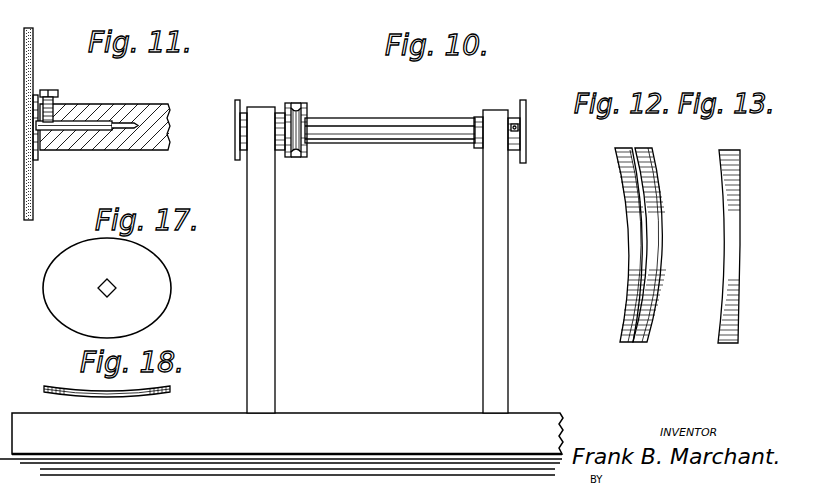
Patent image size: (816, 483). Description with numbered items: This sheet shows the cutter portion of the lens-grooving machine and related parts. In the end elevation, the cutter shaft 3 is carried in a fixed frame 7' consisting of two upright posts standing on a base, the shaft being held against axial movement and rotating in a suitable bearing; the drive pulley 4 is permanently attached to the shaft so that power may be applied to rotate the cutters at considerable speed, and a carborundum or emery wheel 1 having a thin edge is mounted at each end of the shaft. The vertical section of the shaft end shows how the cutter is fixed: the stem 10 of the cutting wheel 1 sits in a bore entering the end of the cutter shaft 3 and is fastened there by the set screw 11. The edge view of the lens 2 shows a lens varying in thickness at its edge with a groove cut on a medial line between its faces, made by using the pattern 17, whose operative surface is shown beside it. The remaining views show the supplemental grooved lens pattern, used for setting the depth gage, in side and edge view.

In FIG. 11, the carborundum or emery wheel 1 is at (34, 52).
In FIG. 10, the carborundum or emery wheel 1 is at (527, 112).
In FIG. 12, the lens 2 is at (628, 224).
In FIG. 11, the cutter shaft 3 is at (107, 106).
In FIG. 10, the cutter shaft 3 is at (385, 119).
In FIG. 10, the pulley 4 is at (306, 108).
In FIG. 10, the frame 7' is at (395, 260).
In FIG. 11, the stem 10 is at (82, 131).
In FIG. 11, the set screw 11 is at (56, 91).
In FIG. 10, the set screw 11 is at (512, 123).
In FIG. 13, the pattern 17 is at (729, 236).